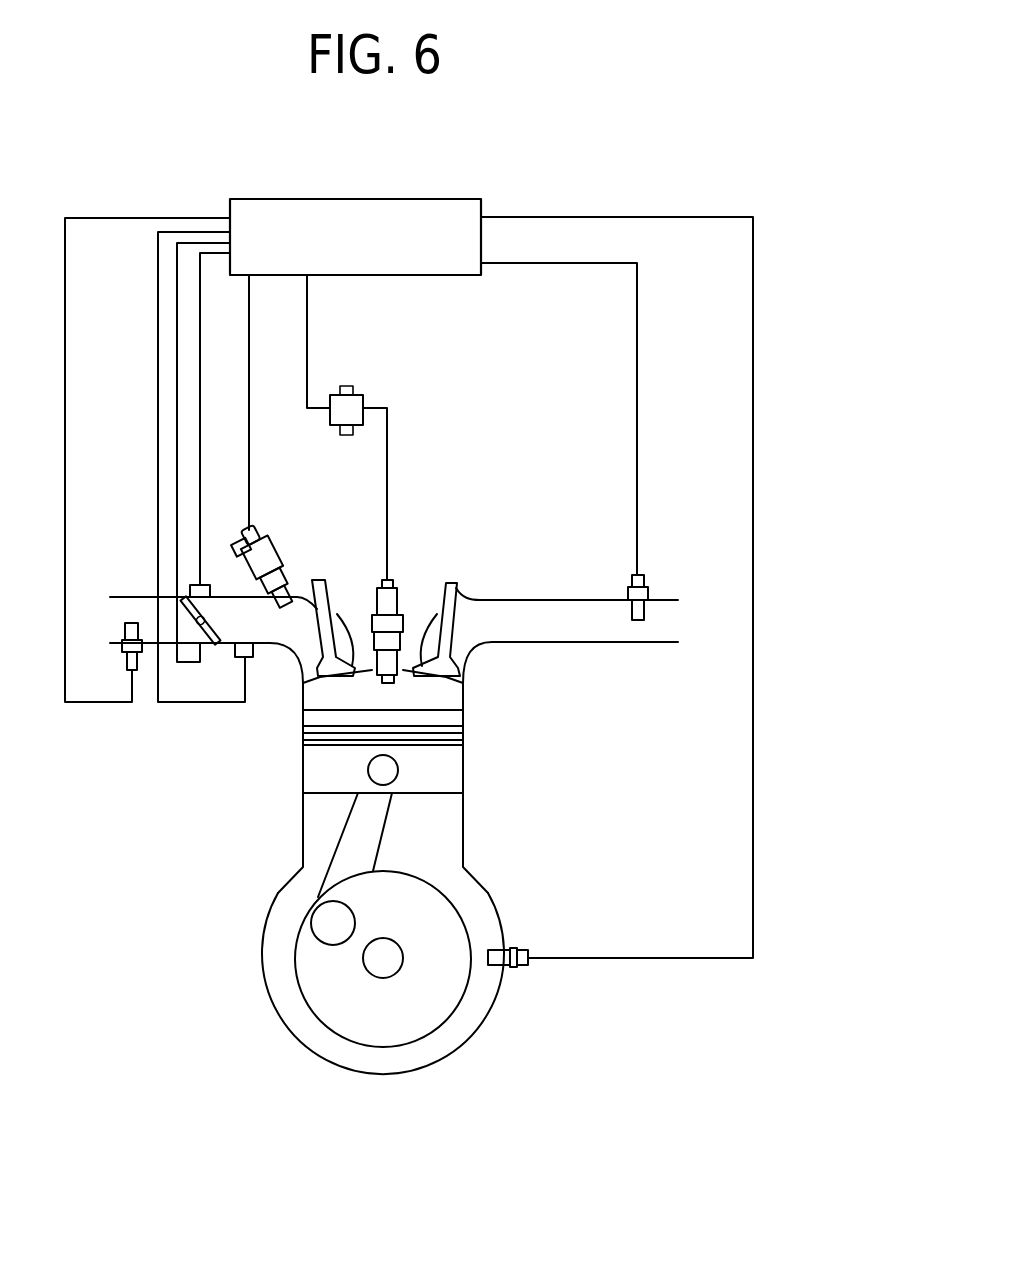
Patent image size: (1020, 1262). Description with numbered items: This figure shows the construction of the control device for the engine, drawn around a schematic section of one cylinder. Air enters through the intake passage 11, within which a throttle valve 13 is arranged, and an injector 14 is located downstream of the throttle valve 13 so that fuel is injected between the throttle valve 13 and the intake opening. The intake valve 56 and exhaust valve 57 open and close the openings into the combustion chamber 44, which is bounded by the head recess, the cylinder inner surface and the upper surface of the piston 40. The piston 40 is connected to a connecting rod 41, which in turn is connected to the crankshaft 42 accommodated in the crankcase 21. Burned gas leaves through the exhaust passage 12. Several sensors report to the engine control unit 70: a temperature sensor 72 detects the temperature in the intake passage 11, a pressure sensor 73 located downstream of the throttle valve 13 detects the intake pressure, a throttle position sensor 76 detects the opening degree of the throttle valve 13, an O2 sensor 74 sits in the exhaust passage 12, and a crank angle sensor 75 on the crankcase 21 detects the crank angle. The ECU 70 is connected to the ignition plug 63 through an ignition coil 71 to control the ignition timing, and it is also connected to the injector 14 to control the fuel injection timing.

The engine control unit (ECU) 70 is at (380, 198).
The ignition coil 71 is at (365, 398).
The intake passage 11 is at (140, 596).
The exhaust passage 12 is at (570, 599).
The throttle valve 13 is at (218, 647).
The injector 14 is at (278, 540).
The throttle position sensor 76 is at (205, 584).
The temperature sensor 72 is at (138, 673).
The pressure sensor 73 is at (247, 659).
The O2 sensor 74 is at (646, 578).
The crank angle sensor 75 is at (530, 950).
The intake valve 56 is at (325, 582).
The exhaust valve 57 is at (455, 584).
The ignition plug 63 is at (395, 580).
The combustion chamber 44 is at (435, 690).
The piston 40 is at (437, 768).
The connecting rod 41 is at (340, 843).
The crankshaft 42 is at (397, 970).
The crankcase 21 is at (490, 1022).